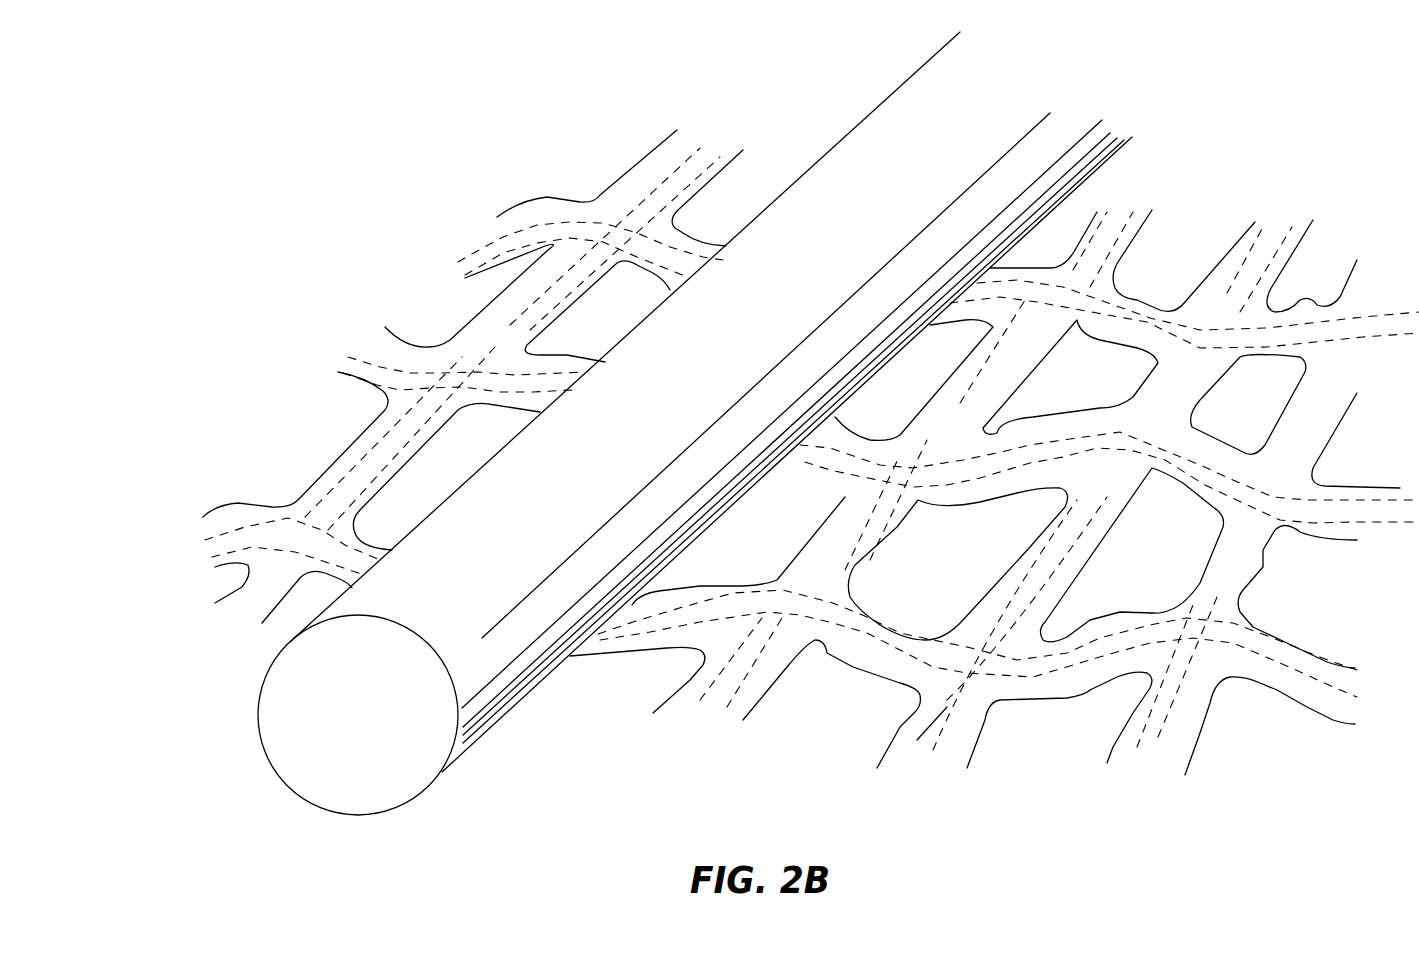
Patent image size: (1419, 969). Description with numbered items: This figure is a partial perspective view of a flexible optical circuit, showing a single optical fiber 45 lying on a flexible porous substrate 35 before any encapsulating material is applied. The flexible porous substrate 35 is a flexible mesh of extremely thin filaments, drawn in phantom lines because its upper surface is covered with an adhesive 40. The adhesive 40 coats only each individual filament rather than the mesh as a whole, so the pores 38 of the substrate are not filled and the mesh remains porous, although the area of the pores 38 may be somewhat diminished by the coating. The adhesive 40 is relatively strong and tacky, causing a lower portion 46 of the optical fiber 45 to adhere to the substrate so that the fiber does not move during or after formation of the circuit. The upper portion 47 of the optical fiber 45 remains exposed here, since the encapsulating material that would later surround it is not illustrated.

The flexible porous substrate 35 is at (693, 158).
The pores 38 is at (580, 312).
The adhesive 40 is at (625, 192).
The optical fiber 45 is at (303, 732).
The lower portion 46 is at (544, 692).
The upper portion 47 is at (458, 509).